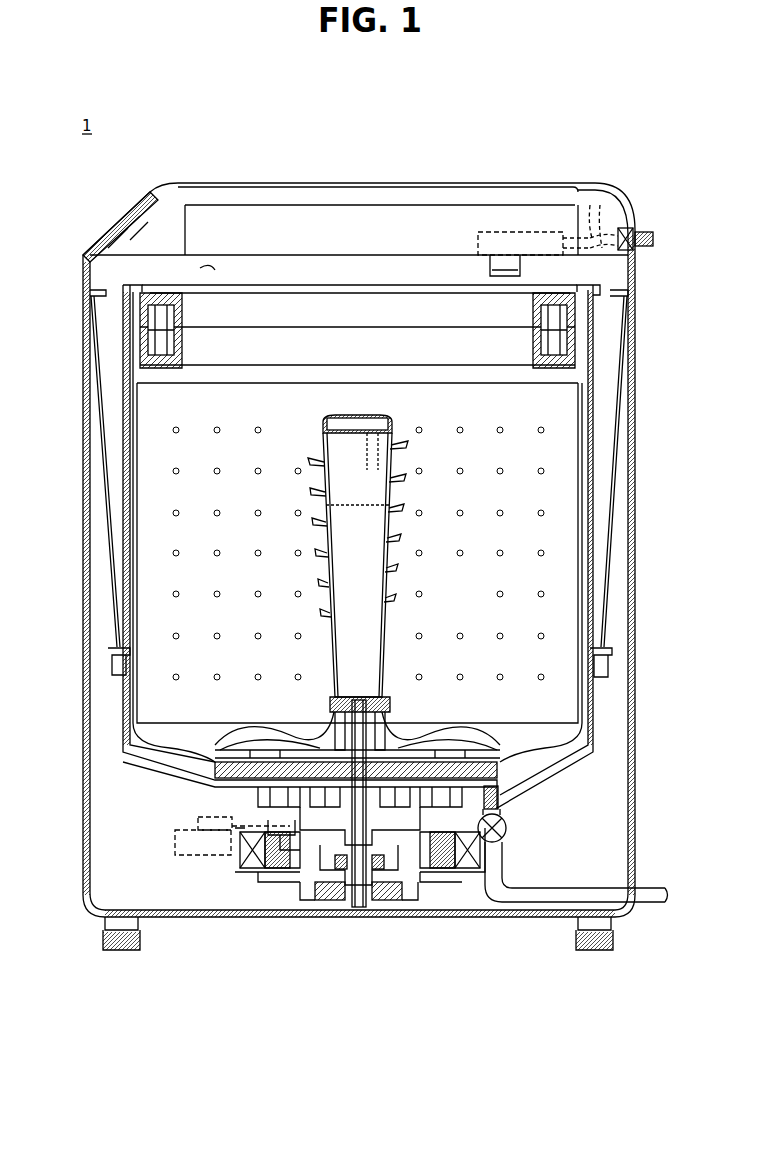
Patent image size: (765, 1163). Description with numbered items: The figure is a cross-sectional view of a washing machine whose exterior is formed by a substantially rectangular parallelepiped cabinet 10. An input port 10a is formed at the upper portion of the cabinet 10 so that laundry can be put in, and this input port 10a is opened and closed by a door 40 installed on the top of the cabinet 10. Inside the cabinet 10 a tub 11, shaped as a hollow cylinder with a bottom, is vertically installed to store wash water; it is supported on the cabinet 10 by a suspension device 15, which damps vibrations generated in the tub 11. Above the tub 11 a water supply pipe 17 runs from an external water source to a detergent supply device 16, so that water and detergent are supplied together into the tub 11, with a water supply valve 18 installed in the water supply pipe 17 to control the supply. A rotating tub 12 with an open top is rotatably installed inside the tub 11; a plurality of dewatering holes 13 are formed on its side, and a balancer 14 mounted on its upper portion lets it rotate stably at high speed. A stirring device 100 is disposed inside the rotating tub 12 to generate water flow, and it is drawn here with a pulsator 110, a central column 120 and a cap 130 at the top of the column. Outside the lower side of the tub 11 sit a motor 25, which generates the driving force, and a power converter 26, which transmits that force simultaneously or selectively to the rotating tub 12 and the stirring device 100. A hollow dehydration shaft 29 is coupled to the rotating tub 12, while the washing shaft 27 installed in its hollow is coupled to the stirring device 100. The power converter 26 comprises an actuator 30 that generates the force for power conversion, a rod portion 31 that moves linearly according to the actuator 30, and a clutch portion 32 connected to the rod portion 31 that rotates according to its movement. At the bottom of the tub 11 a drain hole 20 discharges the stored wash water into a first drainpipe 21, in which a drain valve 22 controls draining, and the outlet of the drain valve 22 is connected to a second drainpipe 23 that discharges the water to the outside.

The cabinet 10 is at (635, 578).
The input port 10a is at (212, 270).
The tub 11 is at (597, 387).
The rotating tub 12 is at (580, 437).
The dewatering holes 13 is at (173, 553).
The balancer 14 is at (573, 332).
The suspension device 15 is at (612, 511).
The detergent supply device 16 is at (512, 238).
The water supply pipe 17 is at (596, 225).
The water supply valve 18 is at (626, 228).
The drain hole 20 is at (500, 806).
The first drainpipe 21 is at (502, 812).
The drain valve 22 is at (507, 833).
The second drainpipe 23 is at (652, 904).
The motor 25 is at (242, 848).
The power converter 26 is at (300, 888).
The washing shaft 27 is at (358, 907).
The dehydration shaft 29 is at (390, 900).
The actuator 30 is at (173, 842).
The rod portion 31 is at (282, 826).
The clutch portion 32 is at (272, 875).
The door 40 is at (278, 200).
The stirring device 100 is at (368, 571).
The pulsator 110 is at (472, 712).
The agitator column 120 is at (423, 525).
The agitator cap 130 is at (388, 410).